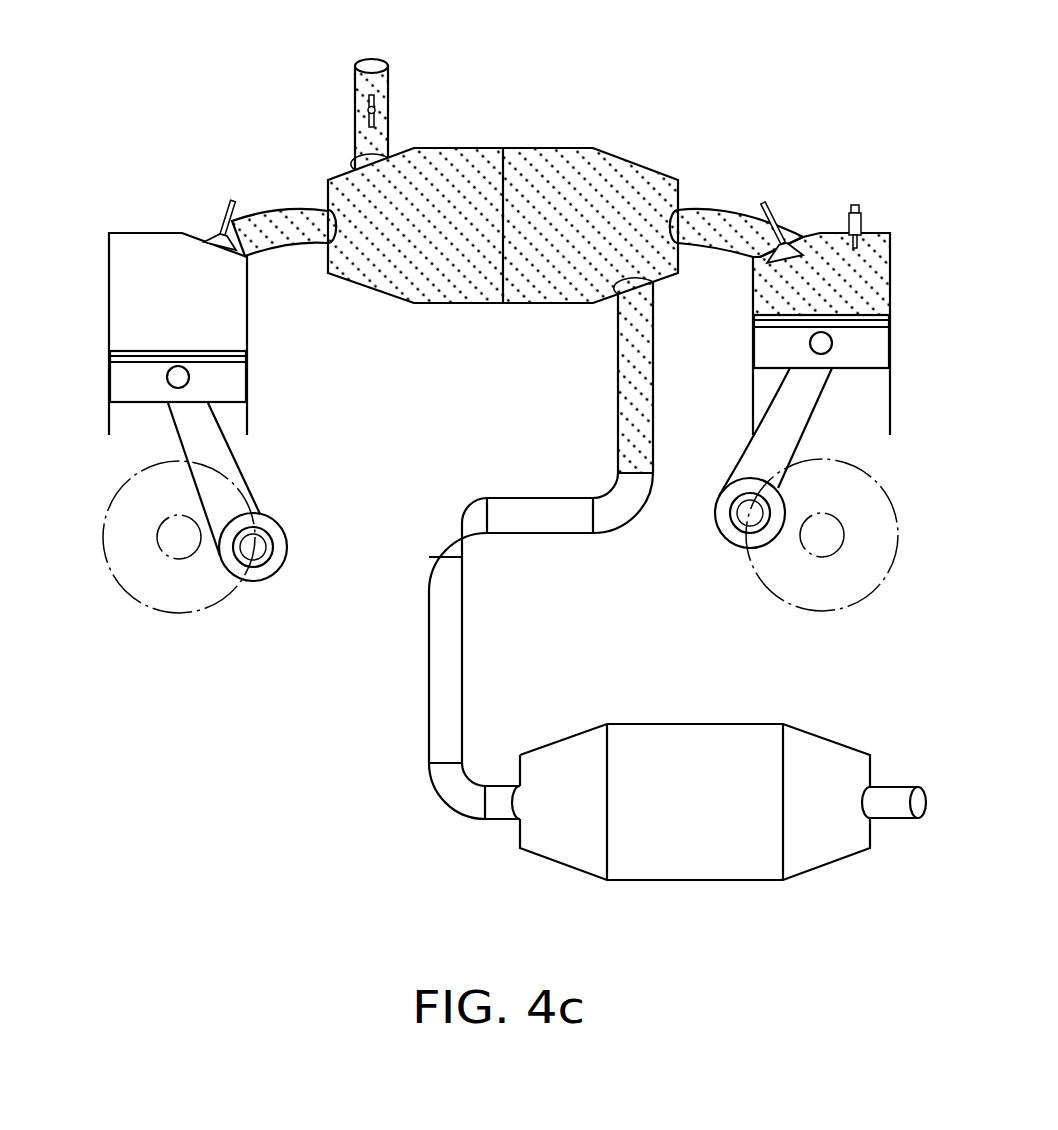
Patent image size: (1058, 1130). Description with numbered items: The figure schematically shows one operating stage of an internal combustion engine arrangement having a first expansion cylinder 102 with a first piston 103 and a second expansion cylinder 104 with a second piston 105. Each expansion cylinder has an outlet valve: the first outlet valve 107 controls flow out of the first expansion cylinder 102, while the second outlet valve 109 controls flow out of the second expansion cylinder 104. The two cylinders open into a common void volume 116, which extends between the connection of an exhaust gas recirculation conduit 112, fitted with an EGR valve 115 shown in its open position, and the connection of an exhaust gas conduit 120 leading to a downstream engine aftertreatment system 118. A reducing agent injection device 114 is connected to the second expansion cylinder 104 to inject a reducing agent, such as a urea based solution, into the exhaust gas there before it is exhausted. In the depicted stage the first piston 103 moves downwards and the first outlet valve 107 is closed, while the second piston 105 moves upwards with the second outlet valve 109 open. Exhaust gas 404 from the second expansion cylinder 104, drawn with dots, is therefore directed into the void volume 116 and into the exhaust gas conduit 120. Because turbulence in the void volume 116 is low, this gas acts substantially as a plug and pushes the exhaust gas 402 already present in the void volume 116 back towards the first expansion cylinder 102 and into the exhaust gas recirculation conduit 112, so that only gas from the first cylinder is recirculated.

The first expansion cylinder 102 is at (100, 245).
The first piston 103 is at (138, 386).
The second expansion cylinder 104 is at (897, 265).
The second piston 105 is at (862, 350).
The first outlet valve 107 is at (230, 205).
The second outlet valve 109 is at (773, 210).
The exhaust gas recirculation conduit 112 is at (367, 85).
The reducing agent injection device 114 is at (858, 220).
The EGR valve 115 is at (367, 110).
The void volume 116 is at (476, 320).
The engine aftertreatment system 118 is at (698, 822).
The exhaust gas conduit 120 is at (538, 515).
The exhaust gas from the first expansion cylinder 402 is at (432, 200).
The exhaust gas from the second expansion cylinder 404 is at (553, 192).